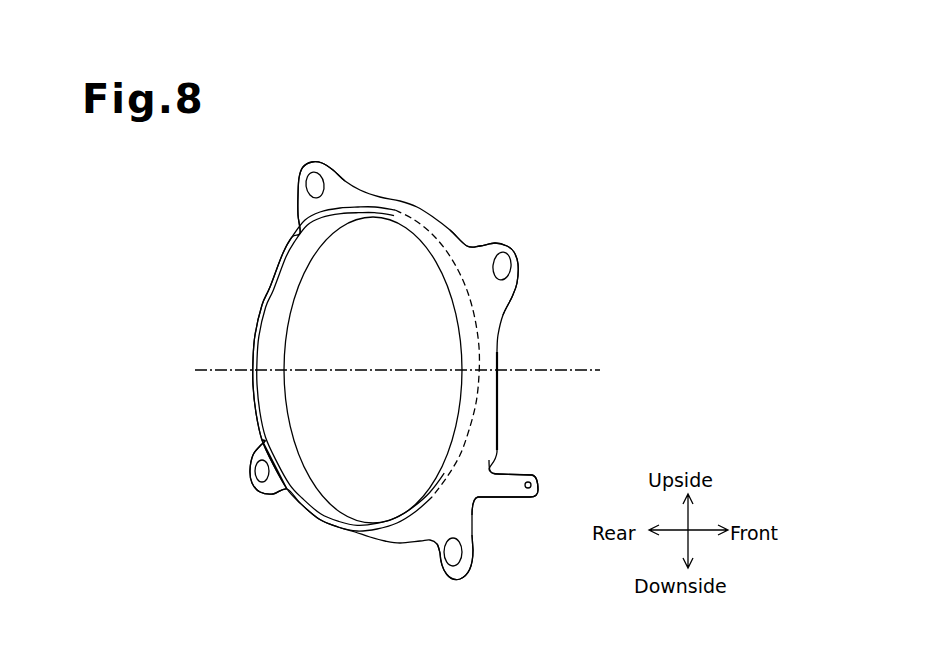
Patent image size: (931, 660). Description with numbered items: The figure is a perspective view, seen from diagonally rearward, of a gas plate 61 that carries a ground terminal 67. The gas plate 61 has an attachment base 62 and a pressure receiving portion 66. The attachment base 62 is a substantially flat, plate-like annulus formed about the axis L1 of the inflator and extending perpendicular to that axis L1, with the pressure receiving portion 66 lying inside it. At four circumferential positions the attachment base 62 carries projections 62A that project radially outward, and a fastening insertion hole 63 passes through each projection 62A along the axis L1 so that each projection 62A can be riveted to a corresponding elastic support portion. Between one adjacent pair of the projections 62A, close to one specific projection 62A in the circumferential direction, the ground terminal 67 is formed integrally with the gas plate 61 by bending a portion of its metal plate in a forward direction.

The gas plate 61 is at (426, 371).
The attachment base 62 is at (500, 419).
The projection 62A is at (298, 206).
The fastening insertion hole 63 is at (320, 182).
The pressure receiving portion 66 is at (473, 371).
The ground terminal 67 is at (489, 495).
The axis L1 is at (212, 365).